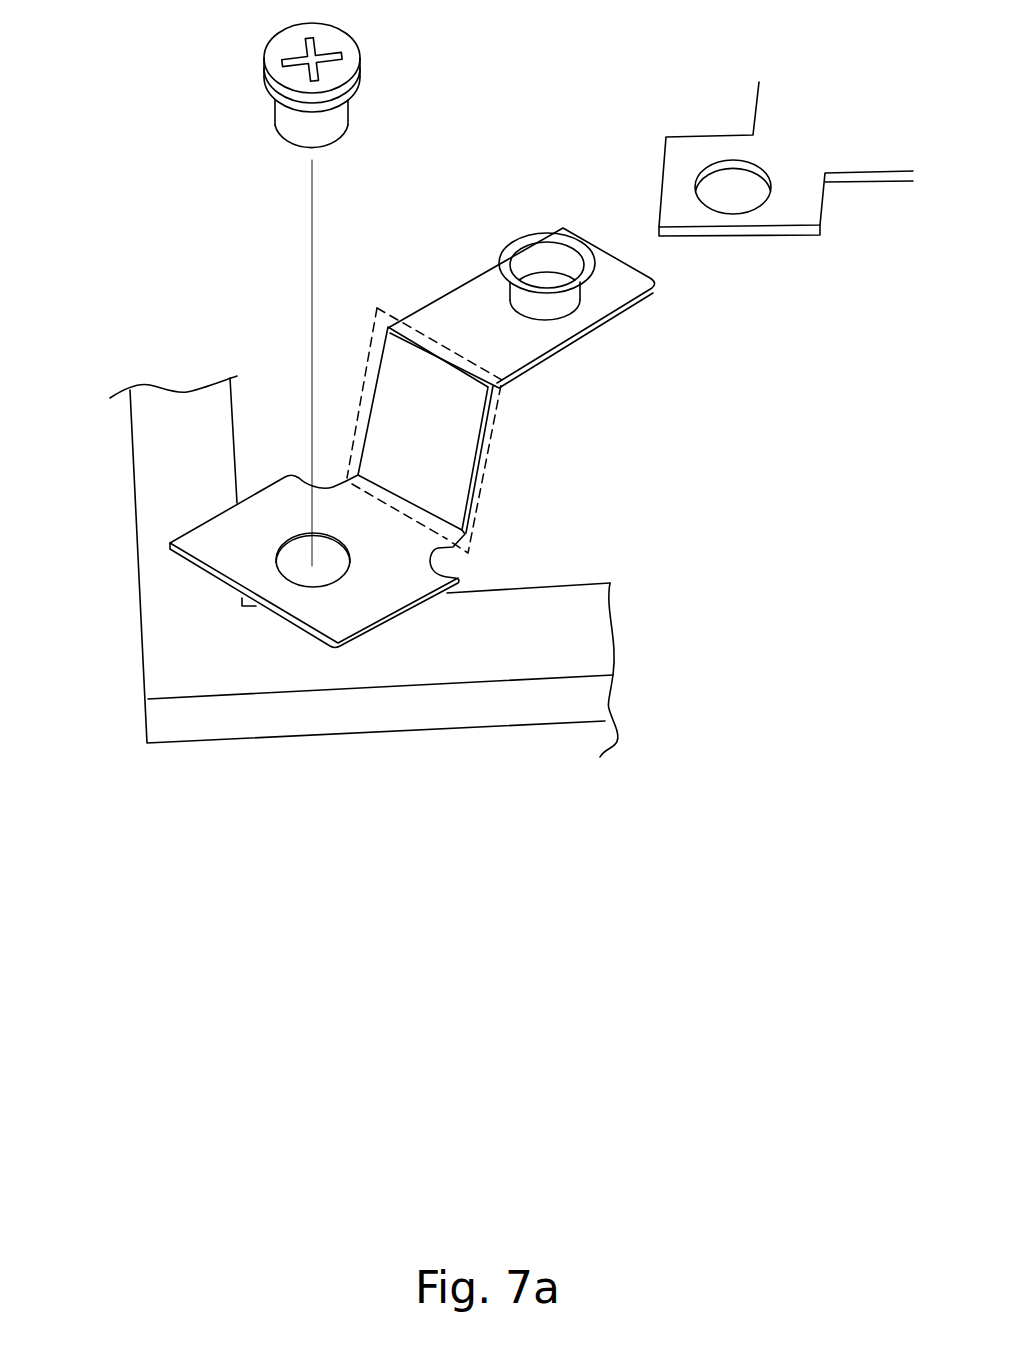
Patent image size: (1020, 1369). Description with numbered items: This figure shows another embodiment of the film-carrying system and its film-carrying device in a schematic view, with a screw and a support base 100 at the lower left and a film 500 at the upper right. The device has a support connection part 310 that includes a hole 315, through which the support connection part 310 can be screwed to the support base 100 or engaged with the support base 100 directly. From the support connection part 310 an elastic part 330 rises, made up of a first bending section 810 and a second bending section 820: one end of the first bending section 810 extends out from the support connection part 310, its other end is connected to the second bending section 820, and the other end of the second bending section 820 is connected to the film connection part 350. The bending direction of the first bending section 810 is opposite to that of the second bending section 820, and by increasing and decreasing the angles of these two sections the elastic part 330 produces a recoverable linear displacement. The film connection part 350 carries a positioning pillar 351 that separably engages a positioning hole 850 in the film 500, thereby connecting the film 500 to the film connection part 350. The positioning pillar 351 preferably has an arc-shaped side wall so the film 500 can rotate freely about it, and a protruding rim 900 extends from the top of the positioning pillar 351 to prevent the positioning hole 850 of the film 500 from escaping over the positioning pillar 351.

The support base 100 is at (497, 648).
The support connection part 310 is at (268, 667).
The hole 315 is at (310, 572).
The elastic part 330 is at (500, 403).
The film connection part 350 is at (557, 273).
The positioning pillar 351 is at (550, 252).
The protruding rim 900 is at (515, 250).
The second bending section 820 is at (417, 342).
The first bending section 810 is at (410, 503).
The positioning hole 850 is at (733, 185).
The film 500 is at (759, 157).